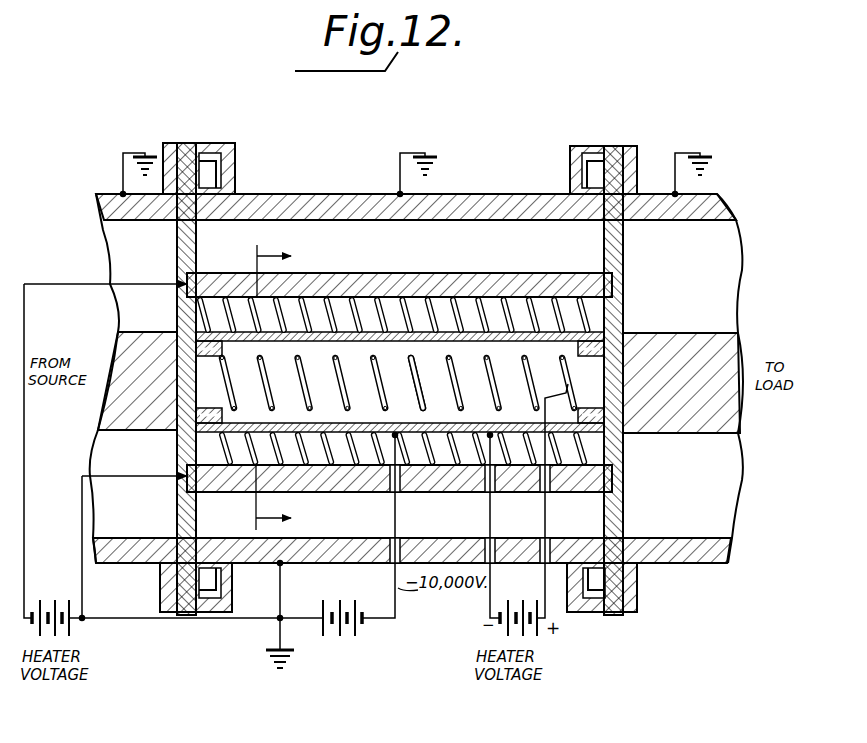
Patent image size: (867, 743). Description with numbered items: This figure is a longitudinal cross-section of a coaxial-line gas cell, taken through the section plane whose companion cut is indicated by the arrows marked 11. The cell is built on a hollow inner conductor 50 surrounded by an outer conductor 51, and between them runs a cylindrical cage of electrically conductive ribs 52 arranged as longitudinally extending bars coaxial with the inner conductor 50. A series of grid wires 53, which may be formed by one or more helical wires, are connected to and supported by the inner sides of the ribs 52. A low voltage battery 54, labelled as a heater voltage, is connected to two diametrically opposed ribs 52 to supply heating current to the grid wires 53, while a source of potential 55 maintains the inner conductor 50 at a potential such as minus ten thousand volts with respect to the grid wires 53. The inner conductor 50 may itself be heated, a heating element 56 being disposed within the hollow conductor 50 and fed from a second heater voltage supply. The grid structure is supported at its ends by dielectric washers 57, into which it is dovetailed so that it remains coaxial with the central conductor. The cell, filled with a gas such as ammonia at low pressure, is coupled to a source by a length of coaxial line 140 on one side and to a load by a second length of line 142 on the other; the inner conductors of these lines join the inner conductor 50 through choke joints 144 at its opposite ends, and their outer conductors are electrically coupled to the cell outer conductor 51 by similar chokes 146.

The section line 11 is at (260, 387).
The hollow inner conductor 50 is at (352, 340).
The outer conductor 51 is at (285, 194).
The electrically conductive ribs 52 is at (383, 282).
The grid wires 53 is at (458, 464).
The low voltage battery 54 is at (60, 598).
The source of potential 55 is at (322, 635).
The heating element 56 is at (418, 352).
The dielectric washers 57 is at (183, 256).
The length of coaxial line 140 is at (165, 255).
The second length of line 142 is at (698, 297).
The choke joints 144 is at (216, 350).
The chokes 146 is at (215, 143).